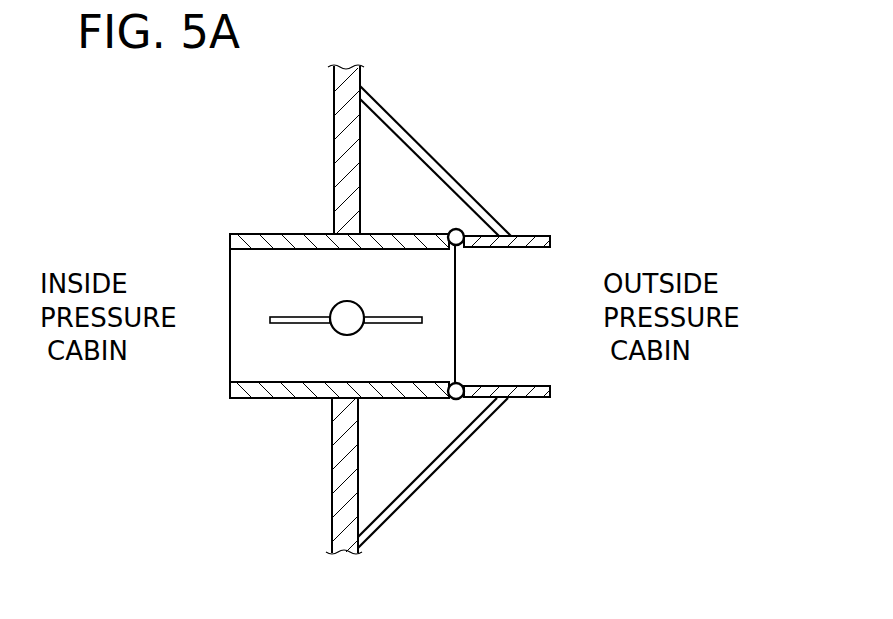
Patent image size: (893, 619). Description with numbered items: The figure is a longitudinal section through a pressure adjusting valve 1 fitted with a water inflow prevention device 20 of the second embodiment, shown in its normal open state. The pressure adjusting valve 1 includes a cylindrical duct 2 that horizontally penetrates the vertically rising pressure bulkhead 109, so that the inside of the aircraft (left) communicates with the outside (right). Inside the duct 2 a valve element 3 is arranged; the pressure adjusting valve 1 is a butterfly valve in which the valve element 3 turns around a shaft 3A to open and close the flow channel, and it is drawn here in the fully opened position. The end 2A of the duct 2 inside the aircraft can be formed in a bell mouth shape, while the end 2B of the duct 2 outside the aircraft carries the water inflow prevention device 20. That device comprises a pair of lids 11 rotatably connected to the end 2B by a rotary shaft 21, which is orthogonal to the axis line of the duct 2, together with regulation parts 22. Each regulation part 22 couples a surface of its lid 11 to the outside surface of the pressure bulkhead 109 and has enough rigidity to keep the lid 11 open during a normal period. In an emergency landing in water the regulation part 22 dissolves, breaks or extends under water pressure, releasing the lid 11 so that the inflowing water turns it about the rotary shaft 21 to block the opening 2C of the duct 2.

The pressure adjusting valve 1 is at (253, 207).
The pressure bulkhead 109 is at (334, 121).
The duct 2 is at (376, 289).
The end of the duct inside the aircraft 2A is at (241, 234).
The end of the duct outside the aircraft 2B is at (440, 234).
The opening of the duct 2C is at (455, 340).
The valve element 3 is at (340, 308).
The shaft 3A is at (362, 307).
The water inflow prevention device 20 is at (480, 315).
The rotary shaft 21 is at (460, 226).
The regulation part 22 is at (418, 135).
The lid 11 is at (524, 232).